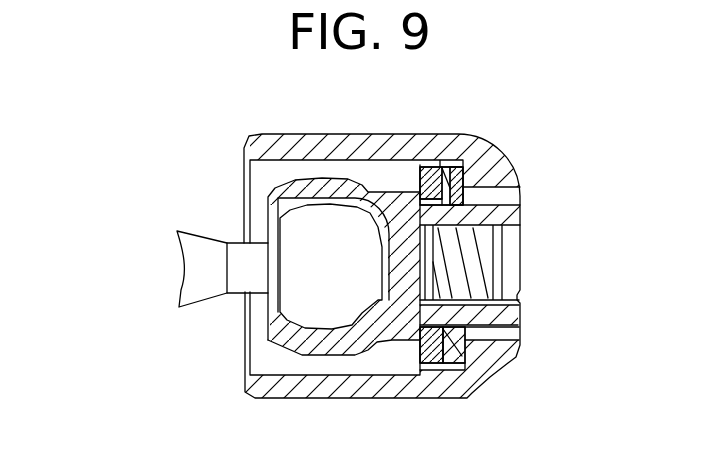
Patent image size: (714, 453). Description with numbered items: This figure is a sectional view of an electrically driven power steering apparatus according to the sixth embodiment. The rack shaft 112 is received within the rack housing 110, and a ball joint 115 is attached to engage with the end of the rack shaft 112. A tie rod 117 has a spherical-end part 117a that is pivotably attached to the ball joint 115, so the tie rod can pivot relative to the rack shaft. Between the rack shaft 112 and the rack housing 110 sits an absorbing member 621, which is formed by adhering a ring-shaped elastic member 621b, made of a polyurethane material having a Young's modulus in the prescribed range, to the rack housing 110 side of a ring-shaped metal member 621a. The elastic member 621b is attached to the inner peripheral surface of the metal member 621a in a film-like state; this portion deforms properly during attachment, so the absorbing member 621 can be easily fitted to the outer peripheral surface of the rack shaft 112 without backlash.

The rack housing 110 is at (282, 150).
The rack shaft 112 is at (505, 196).
The ball joint 115 is at (298, 195).
The tie rod 117 is at (193, 263).
The spherical-end part 117a is at (308, 300).
The absorbing member 621 is at (465, 167).
The metal member 621a is at (437, 160).
The elastic member 621b is at (465, 175).